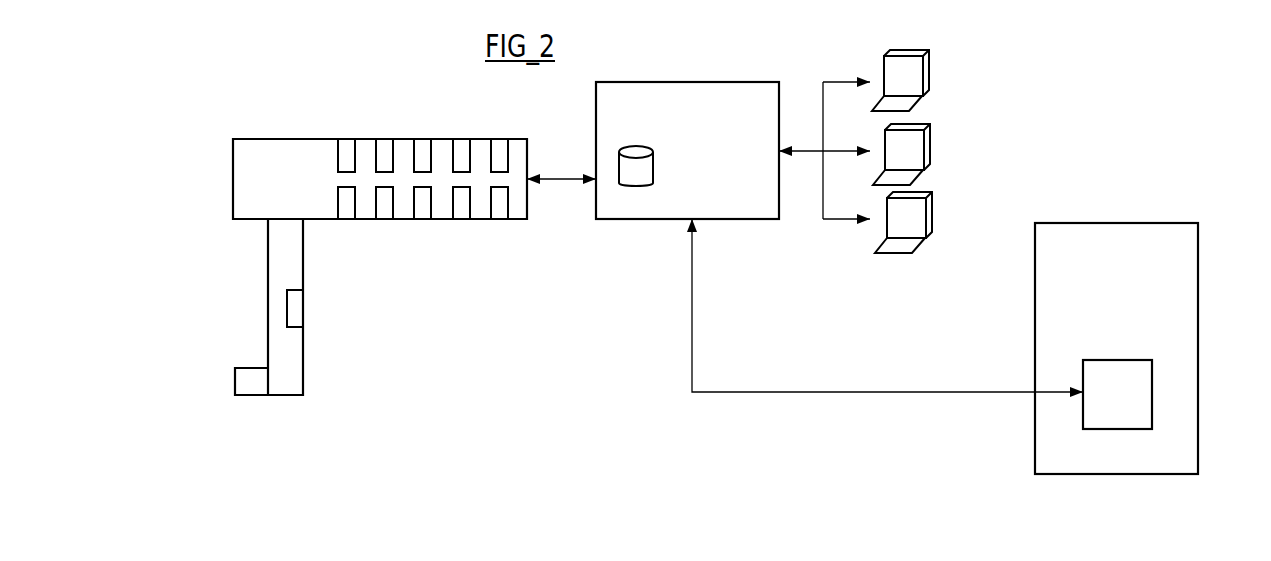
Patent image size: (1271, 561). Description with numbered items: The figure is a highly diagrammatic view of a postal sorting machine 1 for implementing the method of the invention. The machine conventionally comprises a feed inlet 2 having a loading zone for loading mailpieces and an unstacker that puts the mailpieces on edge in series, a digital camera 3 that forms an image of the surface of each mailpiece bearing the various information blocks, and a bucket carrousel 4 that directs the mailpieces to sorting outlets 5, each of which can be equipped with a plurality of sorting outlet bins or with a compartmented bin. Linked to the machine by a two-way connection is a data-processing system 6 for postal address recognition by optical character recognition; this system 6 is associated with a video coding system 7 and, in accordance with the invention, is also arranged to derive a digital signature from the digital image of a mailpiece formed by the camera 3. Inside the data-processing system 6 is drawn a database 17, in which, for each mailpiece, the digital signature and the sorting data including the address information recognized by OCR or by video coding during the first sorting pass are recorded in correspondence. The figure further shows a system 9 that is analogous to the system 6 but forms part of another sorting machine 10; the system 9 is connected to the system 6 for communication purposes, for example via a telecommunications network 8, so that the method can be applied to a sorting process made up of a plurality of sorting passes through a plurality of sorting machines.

The postal sorting machine 1 is at (340, 120).
The feed inlet 2 is at (252, 378).
The digital camera 3 is at (296, 310).
The bucket carrousel 4 is at (265, 138).
The sorting outlets 5 is at (465, 203).
The data-processing system 6 is at (726, 74).
The video coding system 7 is at (933, 205).
The telecommunications network 8 is at (692, 363).
The system 9 is at (1152, 392).
The another sorting machine 10 is at (1123, 196).
The database DBref 17 is at (632, 187).